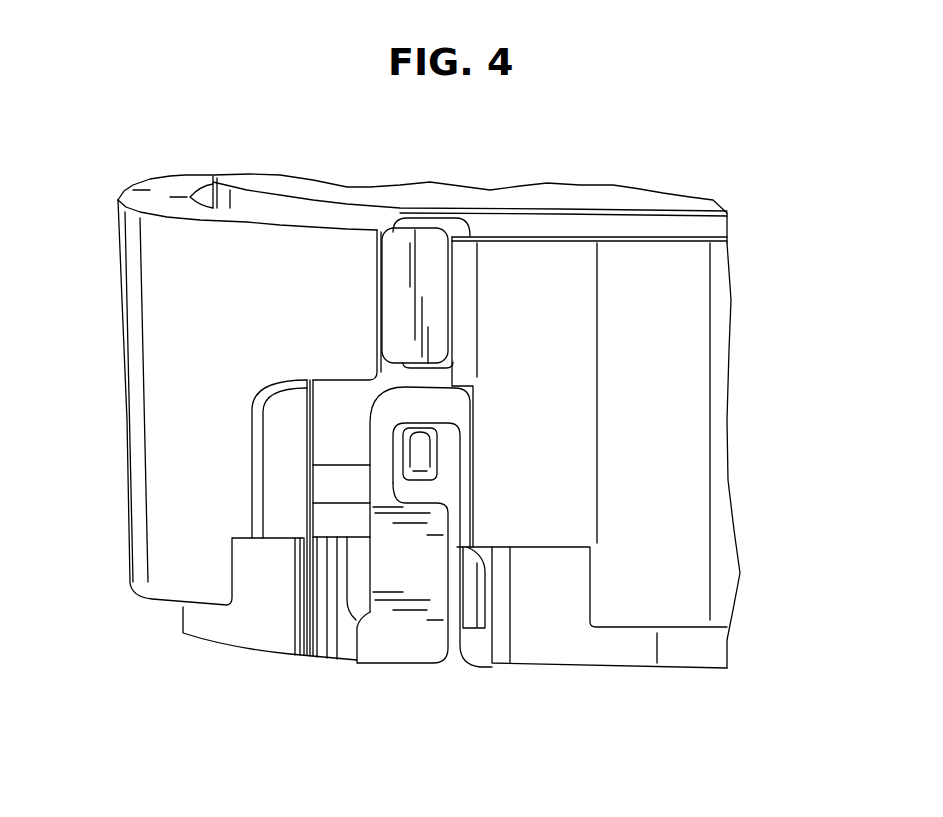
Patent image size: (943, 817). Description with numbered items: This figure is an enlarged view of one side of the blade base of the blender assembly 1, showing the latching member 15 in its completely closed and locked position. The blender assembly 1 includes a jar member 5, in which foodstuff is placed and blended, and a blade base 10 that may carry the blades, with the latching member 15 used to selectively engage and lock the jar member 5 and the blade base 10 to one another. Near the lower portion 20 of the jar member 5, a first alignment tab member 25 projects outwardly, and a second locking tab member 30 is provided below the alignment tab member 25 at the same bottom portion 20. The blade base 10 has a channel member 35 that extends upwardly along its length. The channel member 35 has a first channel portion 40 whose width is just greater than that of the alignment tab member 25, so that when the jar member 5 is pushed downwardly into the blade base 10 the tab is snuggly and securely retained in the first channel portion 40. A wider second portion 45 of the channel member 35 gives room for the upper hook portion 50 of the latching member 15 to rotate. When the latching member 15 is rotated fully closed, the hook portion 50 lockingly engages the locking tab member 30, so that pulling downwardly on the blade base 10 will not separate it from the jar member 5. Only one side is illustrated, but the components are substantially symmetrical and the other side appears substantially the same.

The blender assembly 1 is at (747, 189).
The jar member 5 is at (614, 202).
The blade base 10 is at (731, 437).
The latching member 15 is at (392, 643).
The lower portion of the jar member 20 is at (333, 438).
The first alignment tab member 25 is at (410, 272).
The second locking tab member 30 is at (417, 440).
The channel member 35 is at (360, 480).
The first channel portion 40 is at (430, 342).
The second portion of the channel member 45 is at (290, 480).
The upper hook portion 50 is at (447, 412).